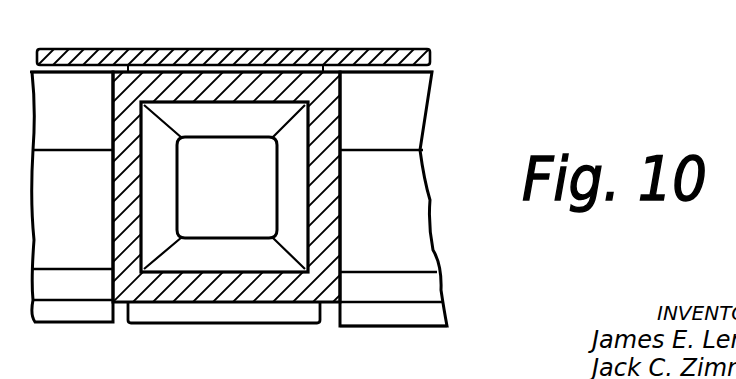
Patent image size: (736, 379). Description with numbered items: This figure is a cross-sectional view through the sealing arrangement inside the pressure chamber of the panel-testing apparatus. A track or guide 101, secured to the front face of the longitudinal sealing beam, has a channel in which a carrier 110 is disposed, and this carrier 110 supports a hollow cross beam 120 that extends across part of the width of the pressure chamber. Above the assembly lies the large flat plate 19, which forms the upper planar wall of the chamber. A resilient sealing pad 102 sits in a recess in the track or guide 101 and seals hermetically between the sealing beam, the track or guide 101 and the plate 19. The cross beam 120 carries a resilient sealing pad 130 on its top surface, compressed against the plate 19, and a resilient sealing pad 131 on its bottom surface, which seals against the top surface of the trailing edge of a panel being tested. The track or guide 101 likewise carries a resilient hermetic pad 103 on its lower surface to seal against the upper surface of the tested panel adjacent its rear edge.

The flat plate 19 is at (93, 53).
The carrier 110 is at (218, 112).
The hollow cross beam 120 is at (267, 82).
The resilient sealing pad 130 is at (297, 70).
The resilient sealing pad 102 is at (377, 72).
The track or guide 101 is at (418, 107).
The resilient sealing pad 131 is at (218, 310).
The resilient hermetic pad 103 is at (384, 312).